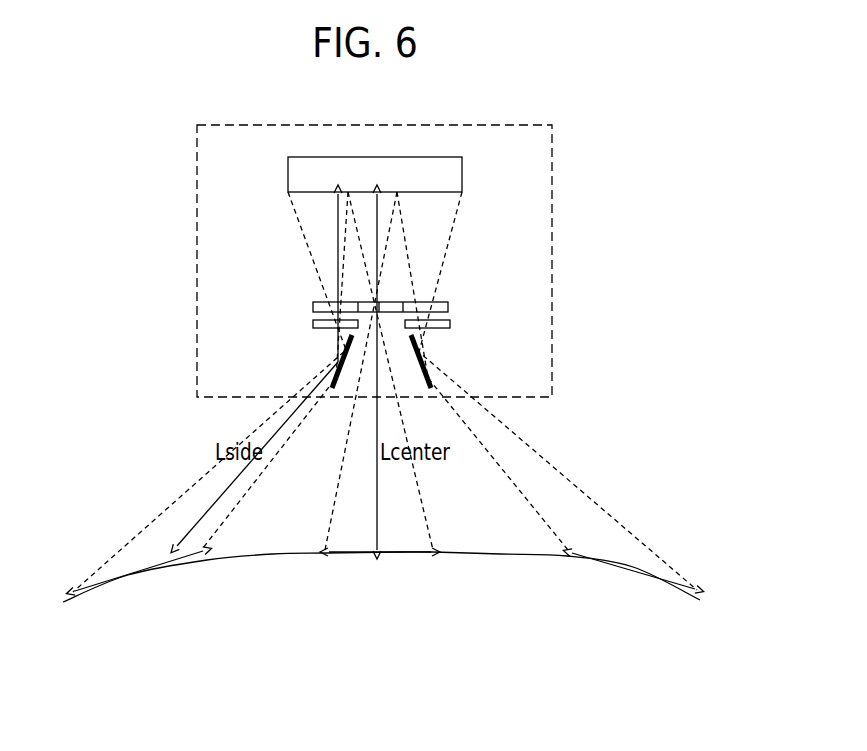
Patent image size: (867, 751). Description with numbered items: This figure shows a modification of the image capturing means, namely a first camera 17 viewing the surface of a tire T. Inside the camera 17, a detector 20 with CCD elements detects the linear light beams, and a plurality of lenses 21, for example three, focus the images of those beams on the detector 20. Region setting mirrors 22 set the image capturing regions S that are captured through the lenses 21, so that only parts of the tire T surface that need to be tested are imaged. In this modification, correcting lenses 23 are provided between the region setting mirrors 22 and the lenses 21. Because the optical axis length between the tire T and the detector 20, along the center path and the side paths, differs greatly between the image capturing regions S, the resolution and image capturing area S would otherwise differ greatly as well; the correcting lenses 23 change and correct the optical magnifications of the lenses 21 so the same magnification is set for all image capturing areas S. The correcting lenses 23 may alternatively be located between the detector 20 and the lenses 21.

The first camera 17 is at (497, 123).
The detector 20 is at (462, 171).
The lenses 21 is at (442, 299).
The region setting mirrors 22 is at (429, 352).
The correcting lenses 23 is at (318, 321).
The image capturing region S is at (135, 575).
The tire T is at (500, 575).